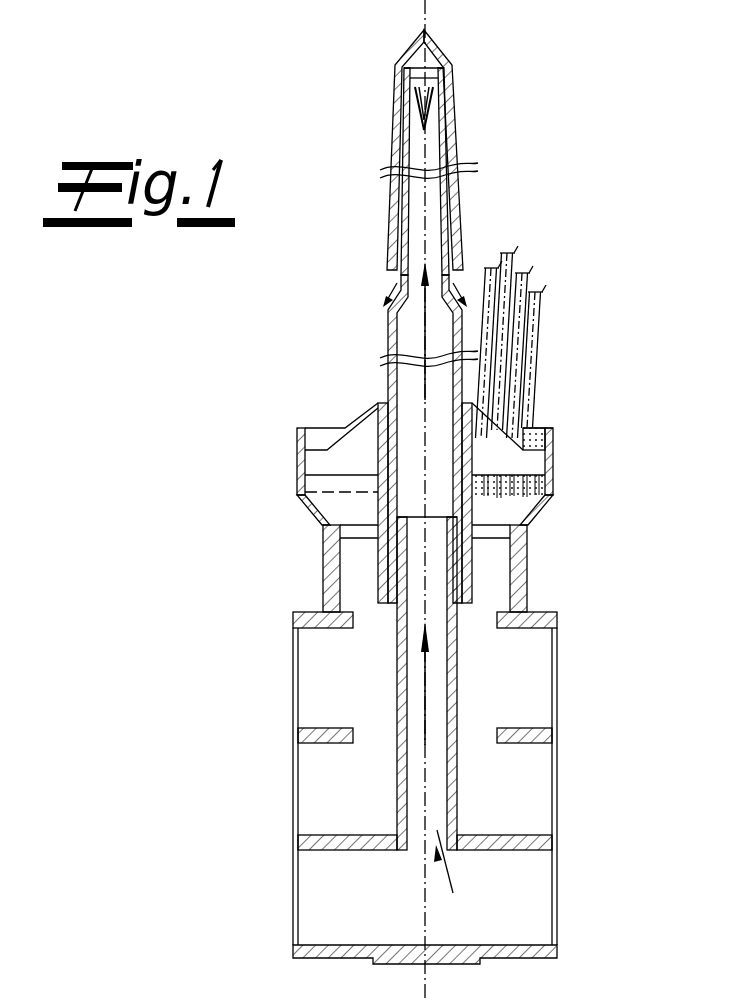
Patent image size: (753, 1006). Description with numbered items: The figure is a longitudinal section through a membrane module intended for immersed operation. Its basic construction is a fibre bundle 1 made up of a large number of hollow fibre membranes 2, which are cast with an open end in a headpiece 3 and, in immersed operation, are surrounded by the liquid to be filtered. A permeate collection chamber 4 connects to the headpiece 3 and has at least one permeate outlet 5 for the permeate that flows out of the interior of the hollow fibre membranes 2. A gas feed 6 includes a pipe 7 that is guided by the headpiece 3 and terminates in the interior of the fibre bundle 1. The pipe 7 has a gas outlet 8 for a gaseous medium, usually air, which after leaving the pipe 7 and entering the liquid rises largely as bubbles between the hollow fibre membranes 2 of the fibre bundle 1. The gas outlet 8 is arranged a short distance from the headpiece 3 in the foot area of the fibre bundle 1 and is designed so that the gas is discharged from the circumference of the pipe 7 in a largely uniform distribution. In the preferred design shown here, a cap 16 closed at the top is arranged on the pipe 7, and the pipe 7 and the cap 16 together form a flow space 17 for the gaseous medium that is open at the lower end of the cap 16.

The fibre bundle 1 is at (540, 372).
The hollow fibre membranes 2 is at (518, 414).
The headpiece 3 is at (573, 502).
The permeate collection chamber 4 is at (373, 658).
The permeate outlet 5 is at (528, 705).
The gas feed 6 is at (417, 773).
The pipe 7 is at (378, 379).
The gas outlet 8 is at (387, 276).
The cap 16 is at (453, 125).
The flow space 17 is at (402, 98).